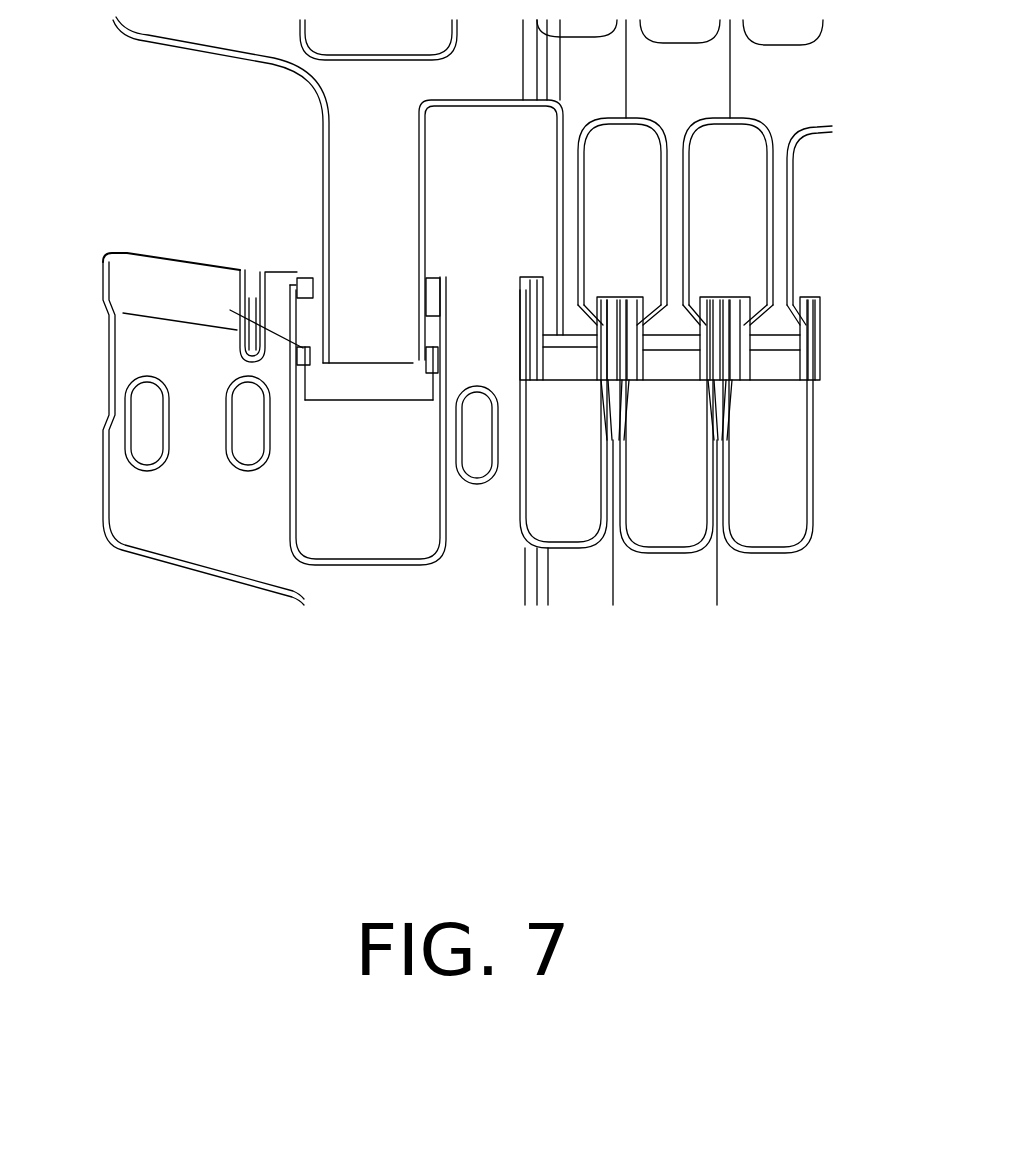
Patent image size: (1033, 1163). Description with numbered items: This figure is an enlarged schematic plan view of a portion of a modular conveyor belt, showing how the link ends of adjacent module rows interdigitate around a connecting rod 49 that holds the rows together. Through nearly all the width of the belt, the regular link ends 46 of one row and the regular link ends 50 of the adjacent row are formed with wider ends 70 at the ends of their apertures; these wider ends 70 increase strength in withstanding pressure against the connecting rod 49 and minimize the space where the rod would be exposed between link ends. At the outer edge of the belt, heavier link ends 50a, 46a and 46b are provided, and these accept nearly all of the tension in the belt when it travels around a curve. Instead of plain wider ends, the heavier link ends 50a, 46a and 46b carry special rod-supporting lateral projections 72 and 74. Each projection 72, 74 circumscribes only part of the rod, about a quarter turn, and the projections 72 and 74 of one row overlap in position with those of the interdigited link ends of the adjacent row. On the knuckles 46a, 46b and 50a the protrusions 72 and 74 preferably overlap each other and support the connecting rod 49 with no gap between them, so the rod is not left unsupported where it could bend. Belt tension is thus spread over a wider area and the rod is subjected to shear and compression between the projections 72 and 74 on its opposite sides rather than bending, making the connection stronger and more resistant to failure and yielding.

The link ends 46 is at (733, 437).
The heavier link end 46a is at (172, 502).
The heavier link end 46b is at (470, 490).
The connecting rod 49 is at (423, 327).
The link ends 50 is at (680, 193).
The heavier link end 50a is at (320, 213).
The wider ends 70 is at (813, 300).
The rod-supporting lateral projection 72 is at (313, 283).
The rod-supporting lateral projection 74 is at (433, 400).